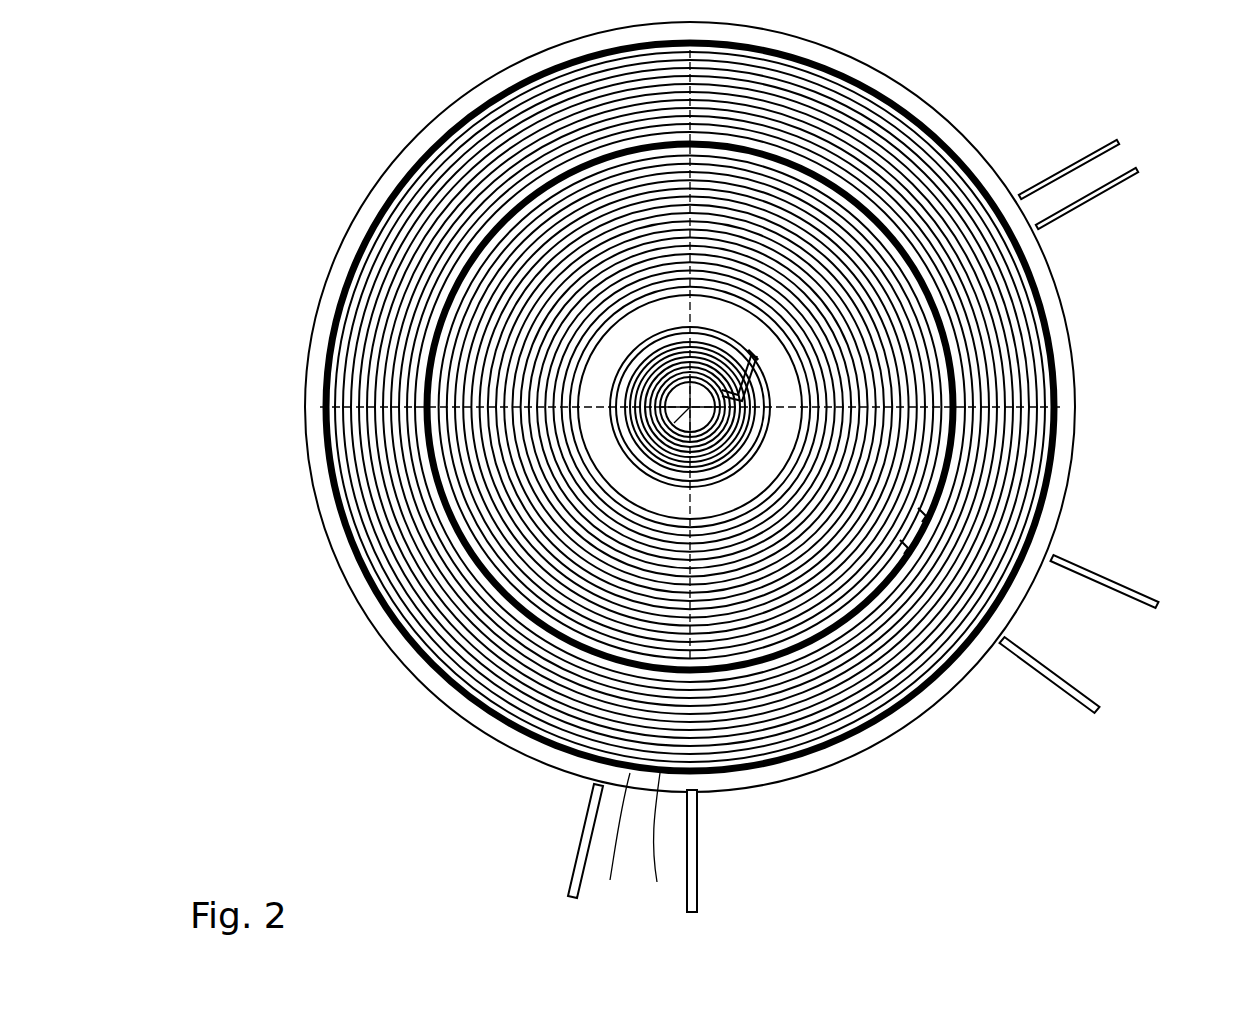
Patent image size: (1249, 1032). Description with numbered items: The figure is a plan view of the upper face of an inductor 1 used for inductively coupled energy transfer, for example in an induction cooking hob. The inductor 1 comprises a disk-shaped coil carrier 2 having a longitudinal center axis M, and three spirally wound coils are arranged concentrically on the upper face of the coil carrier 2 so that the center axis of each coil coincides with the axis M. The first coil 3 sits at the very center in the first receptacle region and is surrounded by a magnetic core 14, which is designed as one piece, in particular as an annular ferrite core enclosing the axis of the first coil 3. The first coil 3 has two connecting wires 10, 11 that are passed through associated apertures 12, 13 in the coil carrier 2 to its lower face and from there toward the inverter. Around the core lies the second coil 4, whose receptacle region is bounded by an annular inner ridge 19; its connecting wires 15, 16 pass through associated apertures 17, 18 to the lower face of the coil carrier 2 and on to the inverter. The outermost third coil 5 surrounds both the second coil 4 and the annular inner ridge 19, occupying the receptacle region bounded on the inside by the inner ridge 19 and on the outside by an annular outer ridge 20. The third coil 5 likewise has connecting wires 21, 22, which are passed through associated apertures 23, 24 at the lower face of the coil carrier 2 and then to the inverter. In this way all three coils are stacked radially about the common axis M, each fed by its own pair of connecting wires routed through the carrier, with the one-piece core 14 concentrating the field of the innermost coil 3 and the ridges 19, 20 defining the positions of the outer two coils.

The inductor 1 is at (330, 105).
The coil carrier 2 is at (322, 478).
The first coil 3 is at (606, 398).
The second coil 4 is at (462, 348).
The third coil 5 is at (365, 287).
The longitudinal center axis M is at (622, 443).
The connecting wire 10 is at (1100, 158).
The connecting wire 11 is at (1110, 197).
The aperture 12 is at (1052, 267).
The aperture 13 is at (768, 380).
The magnetic core 14 is at (751, 351).
The connecting wire 15 is at (1108, 585).
The connecting wire 16 is at (1075, 700).
The aperture 17 is at (925, 528).
The aperture 18 is at (905, 538).
The annular inner ridge 19 is at (807, 390).
The annular outer ridge 20 is at (1070, 410).
The connecting wire 21 is at (697, 898).
The connecting wire 22 is at (568, 892).
The aperture 23 is at (657, 882).
The aperture 24 is at (610, 880).